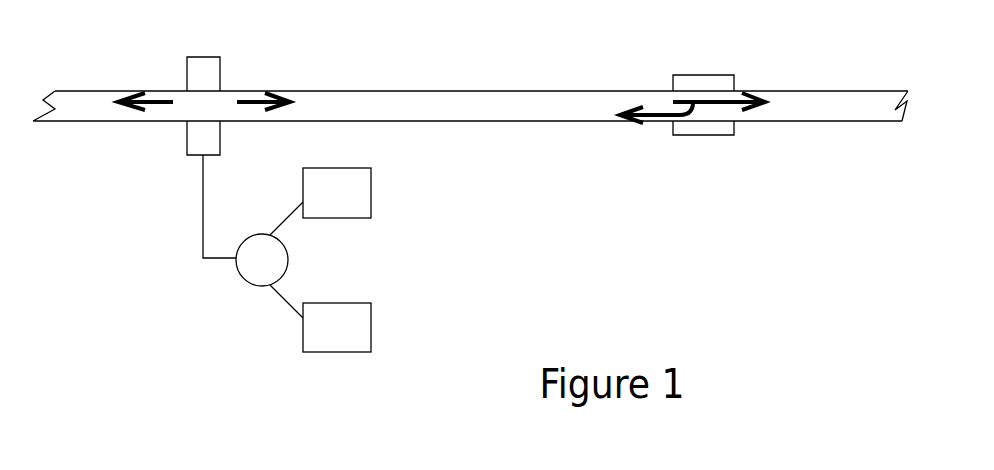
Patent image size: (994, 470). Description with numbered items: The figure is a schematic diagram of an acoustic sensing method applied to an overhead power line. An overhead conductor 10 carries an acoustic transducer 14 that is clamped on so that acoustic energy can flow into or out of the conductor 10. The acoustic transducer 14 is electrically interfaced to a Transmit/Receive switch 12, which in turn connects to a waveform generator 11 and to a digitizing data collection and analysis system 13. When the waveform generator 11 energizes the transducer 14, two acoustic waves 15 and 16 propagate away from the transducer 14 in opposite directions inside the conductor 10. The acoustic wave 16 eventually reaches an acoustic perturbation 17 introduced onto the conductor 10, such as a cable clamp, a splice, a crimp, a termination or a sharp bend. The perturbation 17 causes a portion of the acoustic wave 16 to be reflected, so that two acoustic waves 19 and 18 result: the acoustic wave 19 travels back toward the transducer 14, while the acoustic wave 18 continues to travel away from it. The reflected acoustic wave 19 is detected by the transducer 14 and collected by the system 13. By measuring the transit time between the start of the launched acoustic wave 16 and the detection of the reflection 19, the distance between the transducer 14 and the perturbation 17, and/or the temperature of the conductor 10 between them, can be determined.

The overhead conductor 10 is at (429, 115).
The waveform generator 11 is at (320, 201).
The Transmit/Receive (T/R) switch 12 is at (257, 258).
The digitizing data collection and analysis system 13 is at (320, 318).
The acoustic transducer 14 is at (216, 73).
The acoustic wave 15 is at (153, 103).
The acoustic wave 16 is at (260, 98).
The acoustic perturbation 17 is at (713, 82).
The acoustic wave 18 is at (737, 99).
The acoustic wave 19 is at (653, 117).